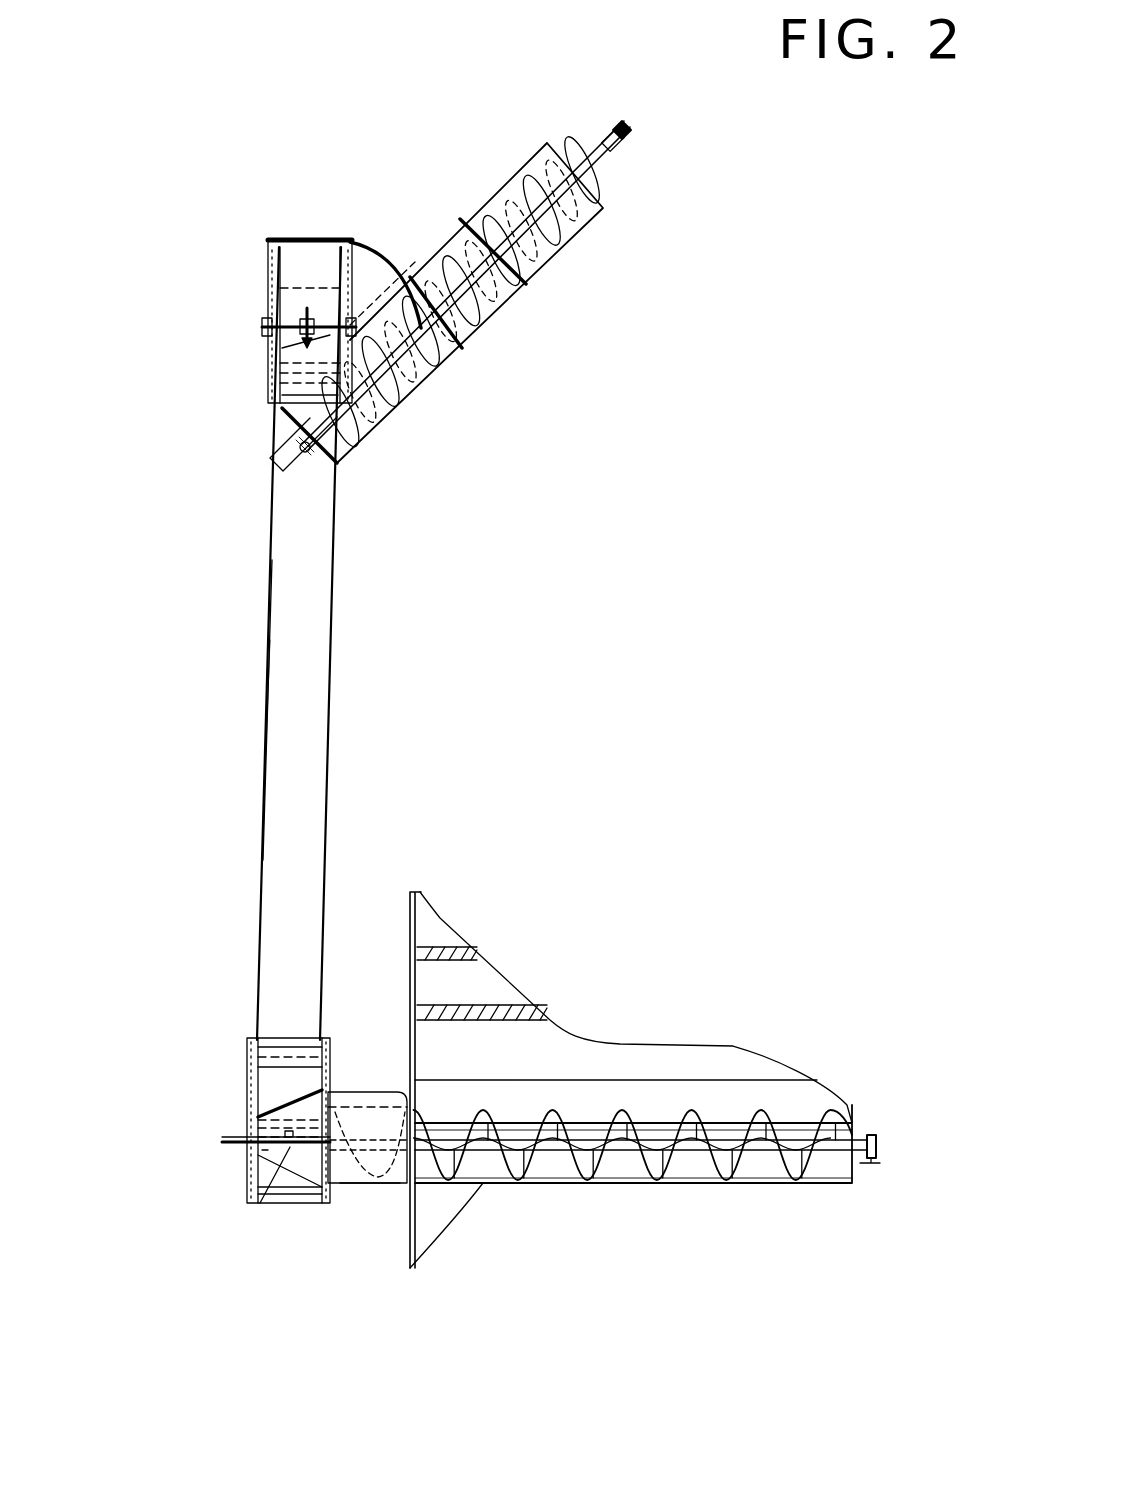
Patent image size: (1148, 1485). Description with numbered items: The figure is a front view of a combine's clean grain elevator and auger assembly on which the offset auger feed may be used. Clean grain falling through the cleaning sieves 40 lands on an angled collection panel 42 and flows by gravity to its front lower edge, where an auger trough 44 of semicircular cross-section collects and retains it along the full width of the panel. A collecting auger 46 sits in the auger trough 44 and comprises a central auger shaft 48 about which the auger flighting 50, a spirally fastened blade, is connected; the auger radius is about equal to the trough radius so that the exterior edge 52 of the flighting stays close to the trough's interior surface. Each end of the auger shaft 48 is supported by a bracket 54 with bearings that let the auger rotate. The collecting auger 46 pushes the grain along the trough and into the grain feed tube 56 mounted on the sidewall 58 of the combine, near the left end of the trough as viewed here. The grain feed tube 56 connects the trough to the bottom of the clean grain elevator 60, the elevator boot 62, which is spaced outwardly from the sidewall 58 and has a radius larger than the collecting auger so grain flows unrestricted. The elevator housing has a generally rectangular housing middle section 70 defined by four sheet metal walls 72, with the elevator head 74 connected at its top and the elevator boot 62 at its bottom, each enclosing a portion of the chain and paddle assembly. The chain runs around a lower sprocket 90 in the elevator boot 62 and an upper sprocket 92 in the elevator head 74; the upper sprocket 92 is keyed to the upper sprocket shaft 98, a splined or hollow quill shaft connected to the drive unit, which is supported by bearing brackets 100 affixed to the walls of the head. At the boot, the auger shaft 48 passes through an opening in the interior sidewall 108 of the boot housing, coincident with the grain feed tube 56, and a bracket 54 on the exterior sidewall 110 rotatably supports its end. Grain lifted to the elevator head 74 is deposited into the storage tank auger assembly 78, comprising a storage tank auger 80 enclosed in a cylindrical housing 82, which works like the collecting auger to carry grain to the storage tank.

The cleaning sieves 40 is at (500, 1013).
The collection panel 42 is at (563, 1092).
The auger trough 44 is at (765, 1175).
The collecting auger 46 is at (727, 1154).
The auger shaft 48 is at (797, 1150).
The auger flighting 50 is at (695, 1117).
The exterior edge 52 is at (590, 1183).
The bracket 54 is at (867, 1142).
The grain feed tube 56 is at (365, 1182).
The sidewall 58 is at (410, 1220).
The clean grain elevator 60 is at (330, 647).
The elevator boot 62 is at (247, 1070).
The housing middle section 70 is at (265, 738).
The sheet metal walls 72 is at (290, 767).
The elevator head 74 is at (273, 283).
The storage tank auger assembly 78 is at (493, 305).
The storage tank auger 80 is at (547, 233).
The cylindrical housing 82 is at (423, 373).
The lower sprocket 90 is at (252, 1203).
The upper sprocket 92 is at (278, 342).
The upper sprocket shaft 98 is at (275, 383).
The brackets 100 is at (266, 322).
The interior sidewall 108 is at (330, 1186).
The exterior sidewall 110 is at (248, 1102).